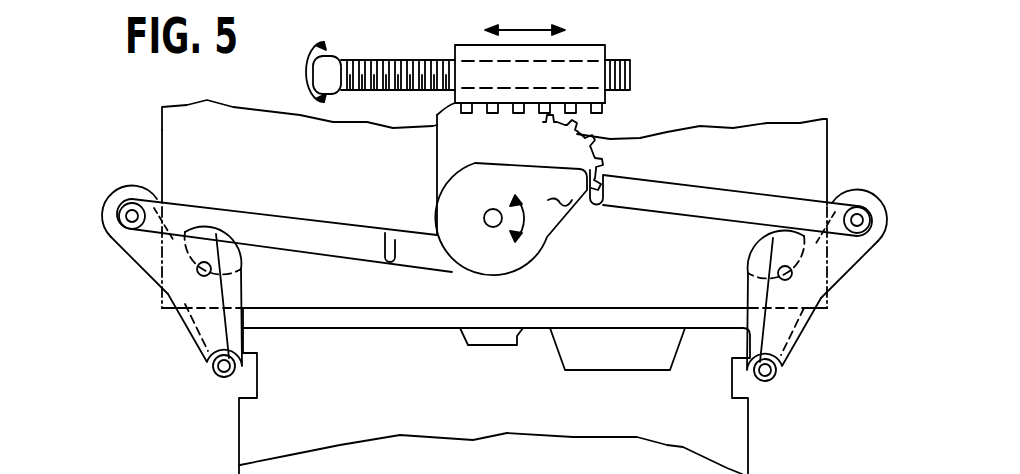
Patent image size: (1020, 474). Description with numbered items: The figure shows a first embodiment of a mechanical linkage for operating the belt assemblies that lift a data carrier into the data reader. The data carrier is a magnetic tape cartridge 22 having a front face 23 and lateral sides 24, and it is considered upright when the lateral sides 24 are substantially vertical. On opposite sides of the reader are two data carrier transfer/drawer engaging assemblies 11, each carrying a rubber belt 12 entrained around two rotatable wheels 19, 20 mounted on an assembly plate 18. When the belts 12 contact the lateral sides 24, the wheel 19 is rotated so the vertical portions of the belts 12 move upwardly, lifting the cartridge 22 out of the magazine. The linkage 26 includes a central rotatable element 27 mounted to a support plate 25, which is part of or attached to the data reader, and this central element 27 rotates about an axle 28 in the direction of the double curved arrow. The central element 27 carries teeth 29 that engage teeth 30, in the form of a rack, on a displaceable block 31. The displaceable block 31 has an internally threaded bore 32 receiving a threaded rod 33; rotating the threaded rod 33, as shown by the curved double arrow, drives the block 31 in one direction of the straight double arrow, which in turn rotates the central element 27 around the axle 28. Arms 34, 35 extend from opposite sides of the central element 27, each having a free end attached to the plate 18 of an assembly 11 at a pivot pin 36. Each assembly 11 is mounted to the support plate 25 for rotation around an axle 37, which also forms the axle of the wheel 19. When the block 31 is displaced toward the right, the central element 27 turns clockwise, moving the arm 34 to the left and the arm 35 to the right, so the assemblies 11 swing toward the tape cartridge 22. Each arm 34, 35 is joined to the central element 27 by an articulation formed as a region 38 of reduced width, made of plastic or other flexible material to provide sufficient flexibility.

The data carrier transfer/drawer engaging assembly 11 is at (180, 333).
The rubber belt 12 is at (238, 300).
The assembly plate 18 is at (137, 252).
The wheel 19 is at (229, 262).
The wheel 20 is at (214, 374).
The magnetic tape cartridge 22 is at (758, 467).
The front face 23 is at (630, 0).
The lateral side 24 is at (240, 438).
The support plate 25 is at (730, 136).
The linkage 26 is at (430, 206).
The central rotatable element 27 is at (513, 263).
The axle 28 is at (486, 223).
The teeth 29 is at (560, 128).
The teeth 30 is at (603, 110).
The displaceable block 31 is at (470, 50).
The internally threaded bore 32 is at (568, 58).
The threaded rod 33 is at (382, 60).
The arm 34 is at (235, 216).
The arm 35 is at (708, 196).
The pivot pin 36 is at (132, 208).
The axle 37 is at (201, 270).
The region of reduced width 38 is at (390, 266).